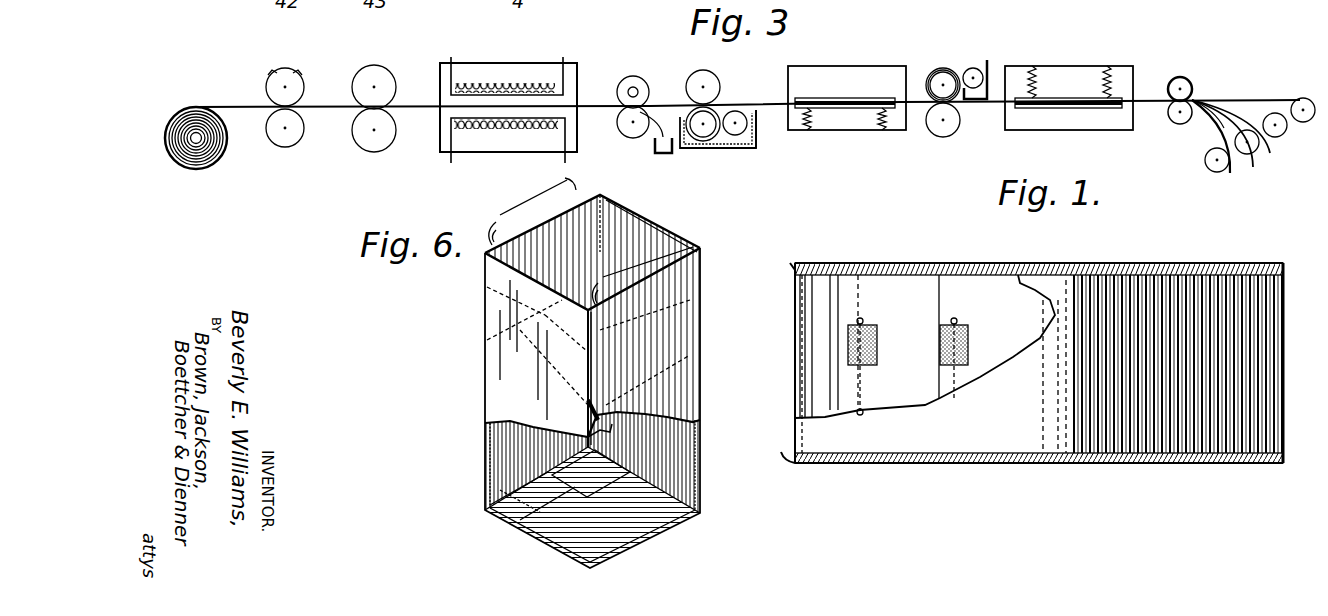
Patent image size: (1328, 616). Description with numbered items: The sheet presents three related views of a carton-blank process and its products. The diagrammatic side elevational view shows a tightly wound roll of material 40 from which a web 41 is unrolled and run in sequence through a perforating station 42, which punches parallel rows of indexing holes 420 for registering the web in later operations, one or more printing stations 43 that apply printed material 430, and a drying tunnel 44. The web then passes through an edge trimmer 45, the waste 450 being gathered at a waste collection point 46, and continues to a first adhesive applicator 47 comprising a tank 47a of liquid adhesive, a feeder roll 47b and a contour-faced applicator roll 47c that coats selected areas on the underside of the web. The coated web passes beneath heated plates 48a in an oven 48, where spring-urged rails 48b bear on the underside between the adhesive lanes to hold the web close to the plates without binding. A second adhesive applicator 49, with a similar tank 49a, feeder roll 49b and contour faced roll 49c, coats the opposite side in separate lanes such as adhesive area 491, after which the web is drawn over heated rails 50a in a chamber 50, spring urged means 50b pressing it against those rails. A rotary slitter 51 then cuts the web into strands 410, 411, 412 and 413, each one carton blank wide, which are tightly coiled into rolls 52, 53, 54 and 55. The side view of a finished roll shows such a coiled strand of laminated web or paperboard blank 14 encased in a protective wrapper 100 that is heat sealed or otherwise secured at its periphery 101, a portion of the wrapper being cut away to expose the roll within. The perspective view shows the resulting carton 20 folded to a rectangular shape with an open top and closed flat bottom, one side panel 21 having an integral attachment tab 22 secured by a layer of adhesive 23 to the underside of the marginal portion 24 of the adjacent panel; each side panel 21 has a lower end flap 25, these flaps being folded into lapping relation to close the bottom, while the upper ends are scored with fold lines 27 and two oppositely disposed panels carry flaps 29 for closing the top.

In FIG. 1, the laminated web / paperboard blank 14 is at (1284, 262).
In FIG. 6, the carton 20 is at (471, 405).
In FIG. 6, the side panel 21 is at (497, 372).
In FIG. 6, the attachment tab 22 is at (612, 426).
In FIG. 6, the layer of adhesive 23 is at (586, 416).
In FIG. 6, the marginal portion 24 is at (588, 398).
In FIG. 6, the lower end flap 25 is at (545, 540).
In FIG. 6, the fold lines 27 is at (545, 333).
In FIG. 6, the flaps 29 is at (528, 207).
In FIG. 3, the roll of material 40 is at (201, 168).
In FIG. 3, the web 41 is at (328, 110).
In FIG. 3, the perforating station 42 is at (286, 70).
In FIG. 3, the printing station 43 is at (374, 70).
In FIG. 3, the drying tunnel 44 is at (508, 67).
In FIG. 3, the edge trimmer 45 is at (632, 75).
In FIG. 3, the waste 450 is at (643, 135).
In FIG. 3, the waste collection point 46 is at (702, 136).
In FIG. 3, the first adhesive applicator 47 is at (747, 150).
In FIG. 3, the tank 47a is at (757, 137).
In FIG. 3, the feeder roll 47b is at (737, 118).
In FIG. 3, the applicator roll 47c is at (718, 150).
In FIG. 3, the oven 48 is at (845, 67).
In FIG. 3, the heated plates 48a is at (848, 99).
In FIG. 3, the spring-urged rails 48b is at (860, 110).
In FIG. 3, the second adhesive applicator 49 is at (949, 60).
In FIG. 3, the tank 49a is at (992, 65).
In FIG. 3, the feeder roll 49b is at (975, 68).
In FIG. 3, the contour faced roll 49c is at (937, 80).
In FIG. 3, the chamber 50 is at (1070, 65).
In FIG. 3, the heated rails 50a is at (1082, 108).
In FIG. 3, the spring urged means 50b is at (1088, 95).
In FIG. 3, the rotary slitter 51 is at (1180, 78).
In FIG. 3, the roll 52 is at (1305, 98).
In FIG. 3, the roll 53 is at (1290, 127).
In FIG. 3, the roll 54 is at (1252, 158).
In FIG. 3, the roll 55 is at (1207, 162).
In FIG. 1, the protective wrapper 100 is at (1168, 285).
In FIG. 1, the periphery 101 is at (768, 448).
In FIG. 3, the strand 410 is at (1266, 97).
In FIG. 1, the strand 410 is at (920, 285).
In FIG. 3, the strand 411 is at (1273, 142).
In FIG. 3, the strand 412 is at (1229, 174).
In FIG. 3, the strand 413 is at (1212, 120).
In FIG. 1, the indexing holes 420 is at (956, 318).
In FIG. 1, the printed material 430 is at (1020, 282).
In FIG. 1, the adhesive area 491 is at (879, 345).